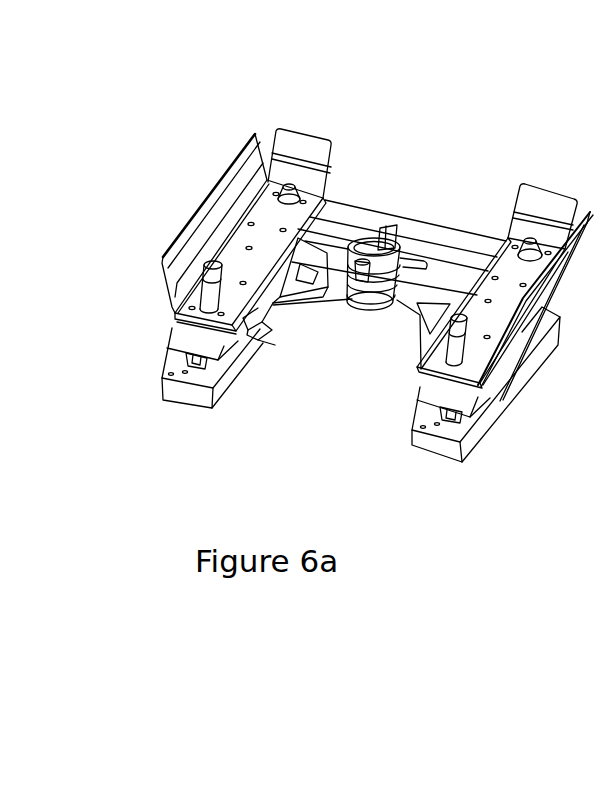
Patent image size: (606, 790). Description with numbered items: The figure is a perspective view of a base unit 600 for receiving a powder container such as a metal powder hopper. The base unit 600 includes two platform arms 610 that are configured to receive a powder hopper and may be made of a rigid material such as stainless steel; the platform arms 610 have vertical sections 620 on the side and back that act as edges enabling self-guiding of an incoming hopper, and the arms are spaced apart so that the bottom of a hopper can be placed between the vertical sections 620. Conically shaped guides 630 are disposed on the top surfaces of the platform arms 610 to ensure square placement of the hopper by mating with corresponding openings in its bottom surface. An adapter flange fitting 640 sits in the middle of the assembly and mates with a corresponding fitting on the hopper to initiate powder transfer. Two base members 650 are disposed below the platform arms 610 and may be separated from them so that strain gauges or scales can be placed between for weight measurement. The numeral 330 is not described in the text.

The rail assembly 600 is at (270, 112).
The bracket clamp 610 is at (417, 367).
The rail fence 620 is at (203, 200).
The locating boss 630 is at (291, 186).
The cylindrical connector 640 is at (399, 232).
The foot block 650 is at (498, 413).
The component 330 is at (589, 705).